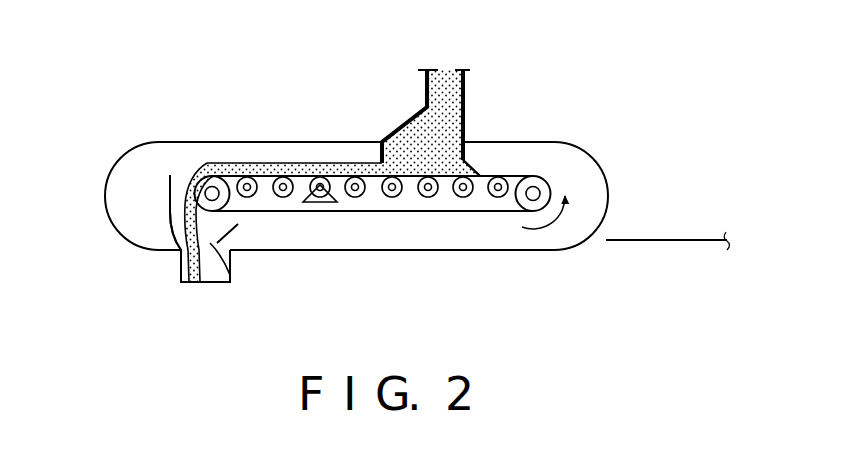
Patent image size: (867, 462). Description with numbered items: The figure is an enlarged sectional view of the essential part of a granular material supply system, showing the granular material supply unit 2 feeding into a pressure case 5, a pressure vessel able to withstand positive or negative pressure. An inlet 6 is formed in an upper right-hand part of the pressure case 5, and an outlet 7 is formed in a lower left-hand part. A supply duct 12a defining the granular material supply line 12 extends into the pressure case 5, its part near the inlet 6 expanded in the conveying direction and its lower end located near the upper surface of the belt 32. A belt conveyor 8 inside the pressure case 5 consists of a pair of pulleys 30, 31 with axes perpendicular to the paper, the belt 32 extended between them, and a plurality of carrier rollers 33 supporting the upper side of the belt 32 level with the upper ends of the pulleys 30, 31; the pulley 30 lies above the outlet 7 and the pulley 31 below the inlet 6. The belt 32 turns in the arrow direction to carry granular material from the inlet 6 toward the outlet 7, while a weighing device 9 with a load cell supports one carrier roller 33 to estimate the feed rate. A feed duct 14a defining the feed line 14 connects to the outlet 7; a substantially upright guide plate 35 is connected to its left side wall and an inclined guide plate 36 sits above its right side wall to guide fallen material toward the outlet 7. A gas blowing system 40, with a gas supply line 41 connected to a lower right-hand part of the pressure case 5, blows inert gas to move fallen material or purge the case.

The granular material supply unit 2 is at (679, 114).
The pressure case 5 is at (110, 122).
The inlet 6 is at (400, 145).
The outlet 7 is at (230, 275).
The belt conveyor 8 is at (455, 226).
The weighing device 9 is at (334, 215).
The granular material supply line 12 is at (448, 82).
The supply duct 12a is at (465, 117).
The feed line 14 is at (212, 276).
The feed duct 14a is at (181, 262).
The pulley 30 is at (204, 170).
The pulley 31 is at (541, 184).
The belt 32 is at (300, 175).
The carrier rollers 33 is at (283, 197).
The upright guide plate 35 is at (170, 193).
The inclined guide plate 36 is at (232, 233).
The gas blowing system 40 is at (688, 230).
The gas supply line 41 is at (630, 240).